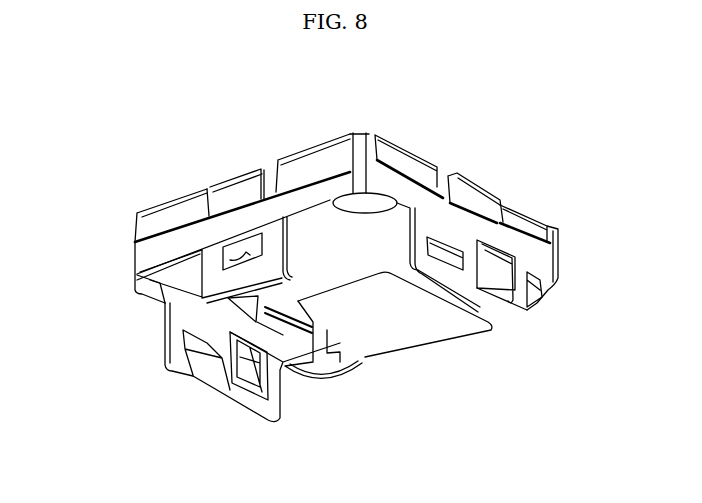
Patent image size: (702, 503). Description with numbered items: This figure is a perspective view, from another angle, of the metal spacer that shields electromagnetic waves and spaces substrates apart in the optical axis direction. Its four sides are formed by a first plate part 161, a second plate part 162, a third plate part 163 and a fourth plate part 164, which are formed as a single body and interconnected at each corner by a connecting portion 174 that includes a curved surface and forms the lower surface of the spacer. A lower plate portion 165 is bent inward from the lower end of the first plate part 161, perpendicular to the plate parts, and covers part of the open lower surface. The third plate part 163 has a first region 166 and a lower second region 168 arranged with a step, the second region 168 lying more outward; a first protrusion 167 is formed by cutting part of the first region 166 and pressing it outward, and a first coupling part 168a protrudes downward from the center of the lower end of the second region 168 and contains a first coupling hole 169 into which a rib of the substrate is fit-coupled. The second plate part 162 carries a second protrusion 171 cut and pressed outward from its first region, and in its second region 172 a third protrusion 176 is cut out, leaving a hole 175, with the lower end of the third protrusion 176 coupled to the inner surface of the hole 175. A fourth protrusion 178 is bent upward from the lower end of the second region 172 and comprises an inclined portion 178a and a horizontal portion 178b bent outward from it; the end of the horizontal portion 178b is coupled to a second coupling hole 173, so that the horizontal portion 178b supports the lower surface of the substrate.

The first plate part 161 is at (543, 303).
The second plate part 162 is at (163, 305).
The third plate part 163 is at (302, 150).
The fourth plate part 164 is at (407, 150).
The lower plate portion 165 is at (410, 323).
The first region 166 is at (168, 208).
The first protrusion 167 is at (237, 192).
The second region 168 is at (153, 252).
The first coupling part 168a is at (137, 285).
The first coupling hole 169 is at (237, 248).
The second protrusion 171 is at (477, 192).
The second region 172 is at (525, 315).
The second coupling hole 173 is at (448, 252).
The connecting portion 174 is at (355, 132).
The hole 175 is at (283, 367).
The third protrusion 176 is at (493, 272).
The fourth protrusion 178 is at (88, 415).
The inclined portion 178a is at (205, 362).
The horizontal portion 178b is at (193, 345).